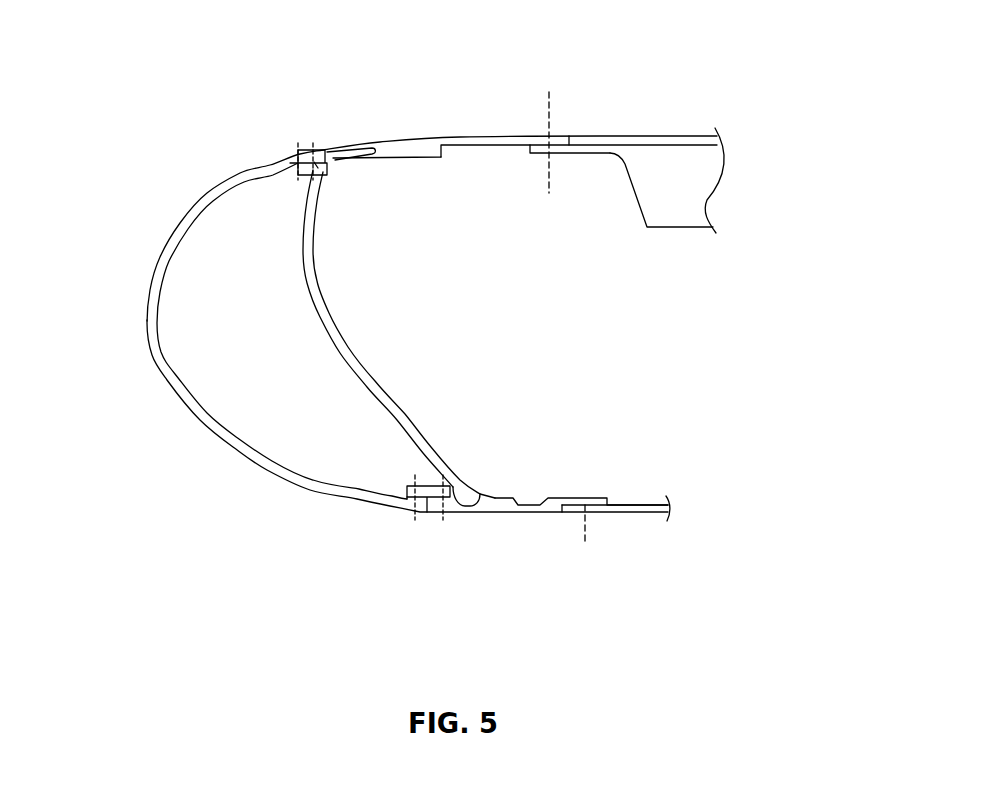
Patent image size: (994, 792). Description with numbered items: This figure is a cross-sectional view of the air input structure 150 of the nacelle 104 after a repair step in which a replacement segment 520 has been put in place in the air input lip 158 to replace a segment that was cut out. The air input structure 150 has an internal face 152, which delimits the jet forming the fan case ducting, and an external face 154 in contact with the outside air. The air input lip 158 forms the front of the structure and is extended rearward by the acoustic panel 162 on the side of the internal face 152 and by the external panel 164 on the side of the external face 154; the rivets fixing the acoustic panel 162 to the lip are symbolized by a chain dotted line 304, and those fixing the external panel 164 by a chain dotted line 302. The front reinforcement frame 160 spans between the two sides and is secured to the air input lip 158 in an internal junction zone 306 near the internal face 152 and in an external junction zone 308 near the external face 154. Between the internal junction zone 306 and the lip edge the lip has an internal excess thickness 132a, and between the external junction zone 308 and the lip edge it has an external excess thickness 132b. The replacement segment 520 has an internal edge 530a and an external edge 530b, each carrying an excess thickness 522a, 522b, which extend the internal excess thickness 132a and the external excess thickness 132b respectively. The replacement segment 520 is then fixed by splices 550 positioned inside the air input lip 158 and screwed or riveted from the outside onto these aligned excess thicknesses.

The nacelle 104 is at (742, 518).
The internal excess thickness 132a is at (322, 150).
The external excess thickness 132b is at (456, 497).
The air input structure 150 is at (118, 190).
The internal face 152 is at (414, 47).
The external face 154 is at (471, 563).
The air input lip 158 is at (179, 491).
The front reinforcement frame 160 is at (340, 330).
The acoustic panel 162 is at (687, 181).
The external panel 164 is at (655, 510).
The chain dotted line 302 is at (583, 530).
The chain dotted line 304 is at (552, 125).
The internal junction zone 306 is at (420, 192).
The external junction zone 308 is at (507, 475).
The replacement segment 520 is at (170, 377).
The excess thickness of the internal edge 522a is at (276, 170).
The excess thickness of the external edge 522b is at (408, 497).
The internal edge 530a is at (303, 148).
The external edge 530b is at (428, 512).
The splices 550 is at (318, 172).